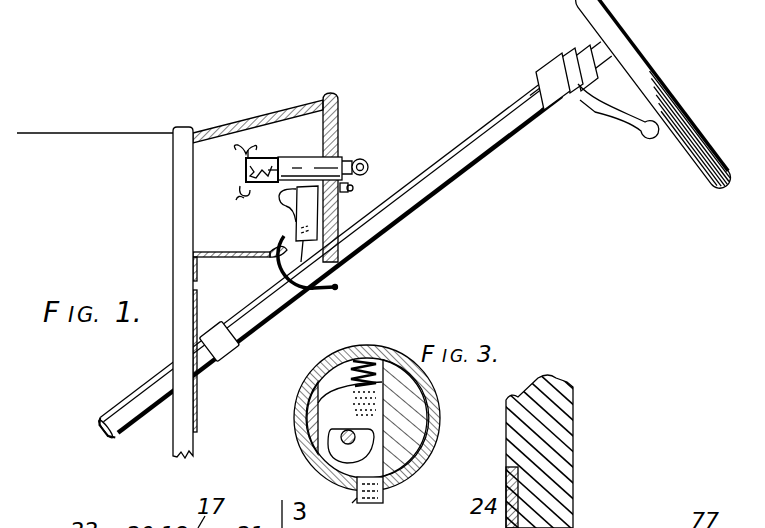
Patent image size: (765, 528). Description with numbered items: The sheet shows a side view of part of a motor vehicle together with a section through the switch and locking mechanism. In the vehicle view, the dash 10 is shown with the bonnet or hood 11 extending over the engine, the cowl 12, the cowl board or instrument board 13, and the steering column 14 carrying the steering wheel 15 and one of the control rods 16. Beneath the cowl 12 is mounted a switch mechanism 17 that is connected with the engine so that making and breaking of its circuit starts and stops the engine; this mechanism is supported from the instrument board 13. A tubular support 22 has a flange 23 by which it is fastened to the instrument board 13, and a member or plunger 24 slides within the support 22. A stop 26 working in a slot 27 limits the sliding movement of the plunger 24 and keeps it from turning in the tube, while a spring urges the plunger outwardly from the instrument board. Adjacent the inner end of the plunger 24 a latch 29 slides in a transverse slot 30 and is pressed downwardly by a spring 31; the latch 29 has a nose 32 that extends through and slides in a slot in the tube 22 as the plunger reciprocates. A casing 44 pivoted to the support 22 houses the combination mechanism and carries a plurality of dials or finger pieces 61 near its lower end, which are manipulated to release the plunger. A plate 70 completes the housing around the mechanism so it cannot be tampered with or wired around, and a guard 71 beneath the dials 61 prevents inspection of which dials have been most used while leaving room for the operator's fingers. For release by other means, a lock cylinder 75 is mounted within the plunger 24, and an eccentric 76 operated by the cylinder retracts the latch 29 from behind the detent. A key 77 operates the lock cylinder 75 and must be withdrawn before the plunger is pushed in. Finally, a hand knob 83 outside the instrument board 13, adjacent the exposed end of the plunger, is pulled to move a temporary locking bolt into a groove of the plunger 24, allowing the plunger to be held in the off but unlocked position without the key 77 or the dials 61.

In FIG. 1, the dash 10 is at (173, 216).
In FIG. 1, the bonnet or hood 11 is at (97, 131).
In FIG. 1, the cowl 12 is at (240, 116).
In FIG. 1, the cowl board or instrument board 13 is at (338, 123).
In FIG. 3, the cowl board or instrument board 13 is at (570, 447).
In FIG. 1, the steering column 14 is at (245, 338).
In FIG. 1, the steering wheel 15 is at (648, 72).
In FIG. 1, the control rod 16 is at (617, 117).
In FIG. 1, the switch mechanism 17 is at (246, 171).
In FIG. 3, the support 22 is at (440, 415).
In FIG. 3, the flange 23 is at (507, 490).
In FIG. 3, the member or plunger 24 is at (407, 398).
In FIG. 3, the stop 26 is at (428, 522).
In FIG. 3, the slot 27 is at (393, 522).
In FIG. 3, the latch 29 is at (327, 415).
In FIG. 3, the transverse slot 30 is at (326, 380).
In FIG. 3, the spring 31 is at (345, 356).
In FIG. 3, the nose 32 is at (360, 502).
In FIG. 1, the casing 44 is at (305, 212).
In FIG. 1, the dials or finger pieces 61 is at (352, 261).
In FIG. 1, the plate 70 is at (242, 258).
In FIG. 1, the guard 71 is at (329, 294).
In FIG. 3, the lock cylinder 75 is at (493, 522).
In FIG. 3, the eccentric 76 is at (341, 438).
In FIG. 1, the key 77 is at (357, 157).
In FIG. 1, the hand knob 83 is at (352, 186).